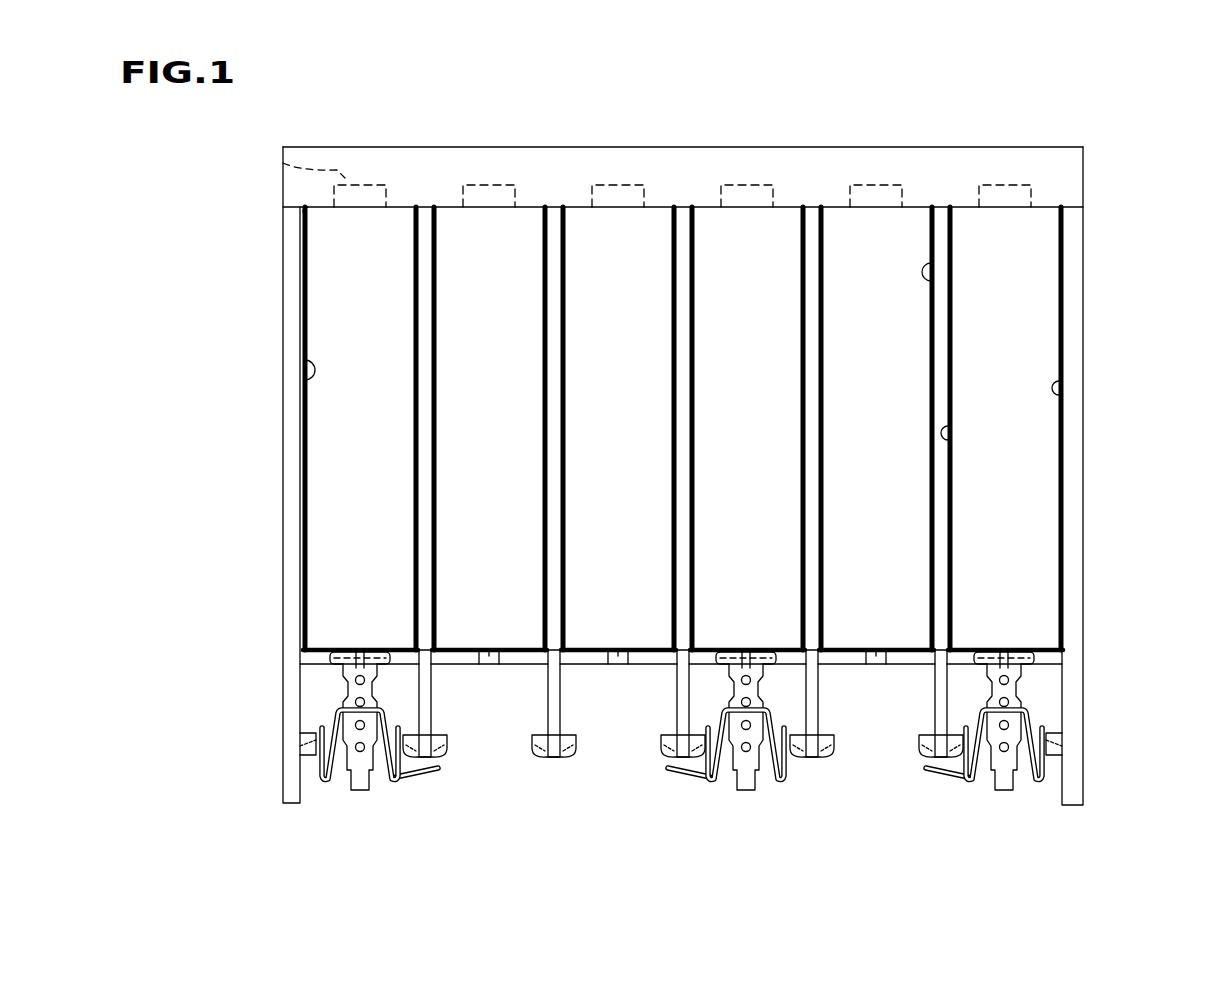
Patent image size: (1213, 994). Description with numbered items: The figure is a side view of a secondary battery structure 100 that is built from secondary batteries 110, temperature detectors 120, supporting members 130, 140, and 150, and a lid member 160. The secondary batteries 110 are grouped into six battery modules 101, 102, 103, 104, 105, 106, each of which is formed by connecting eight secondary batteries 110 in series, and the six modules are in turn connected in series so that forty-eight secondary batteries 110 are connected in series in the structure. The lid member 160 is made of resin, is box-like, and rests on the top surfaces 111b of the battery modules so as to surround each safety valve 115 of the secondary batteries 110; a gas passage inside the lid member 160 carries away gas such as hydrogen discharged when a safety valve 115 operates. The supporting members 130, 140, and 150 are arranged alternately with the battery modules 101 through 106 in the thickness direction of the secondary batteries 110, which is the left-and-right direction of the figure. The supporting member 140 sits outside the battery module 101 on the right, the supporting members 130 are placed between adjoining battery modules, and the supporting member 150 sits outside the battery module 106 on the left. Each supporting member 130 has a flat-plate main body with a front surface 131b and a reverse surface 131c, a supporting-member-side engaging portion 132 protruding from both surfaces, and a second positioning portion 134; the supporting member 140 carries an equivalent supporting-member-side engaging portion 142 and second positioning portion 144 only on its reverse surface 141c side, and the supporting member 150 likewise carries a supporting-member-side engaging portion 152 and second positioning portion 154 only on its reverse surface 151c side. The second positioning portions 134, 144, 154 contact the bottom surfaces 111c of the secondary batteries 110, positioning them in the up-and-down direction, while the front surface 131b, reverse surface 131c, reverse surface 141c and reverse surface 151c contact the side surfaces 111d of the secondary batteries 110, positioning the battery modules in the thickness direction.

The secondary battery structure 100 is at (943, 99).
The battery module 101 is at (1033, 523).
The battery module 102 is at (910, 243).
The battery module 103 is at (780, 240).
The battery module 104 is at (657, 235).
The battery module 105 is at (530, 232).
The battery module 106 is at (393, 230).
The secondary battery 110 is at (318, 455).
The top surface 111b is at (318, 207).
The bottom surface 111c is at (324, 652).
The side surface 111d is at (303, 325).
The safety valve 115 is at (283, 160).
The temperature detector 120 is at (335, 696).
The supporting member 130 is at (432, 710).
The front surface 131b is at (948, 252).
The reverse surface 131c is at (948, 232).
The supporting-member-side engaging portion 132 is at (548, 757).
The second positioning portion 134 is at (402, 650).
The supporting member 140 is at (1072, 350).
The reverse surface 141c is at (1064, 392).
The supporting-member-side engaging portion 142 is at (1060, 768).
The second positioning portion 144 is at (1040, 670).
The supporting member 150 is at (293, 415).
The reverse surface 151c is at (303, 363).
The supporting-member-side engaging portion 152 is at (307, 763).
The second positioning portion 154 is at (326, 655).
The lid member 160 is at (1017, 170).